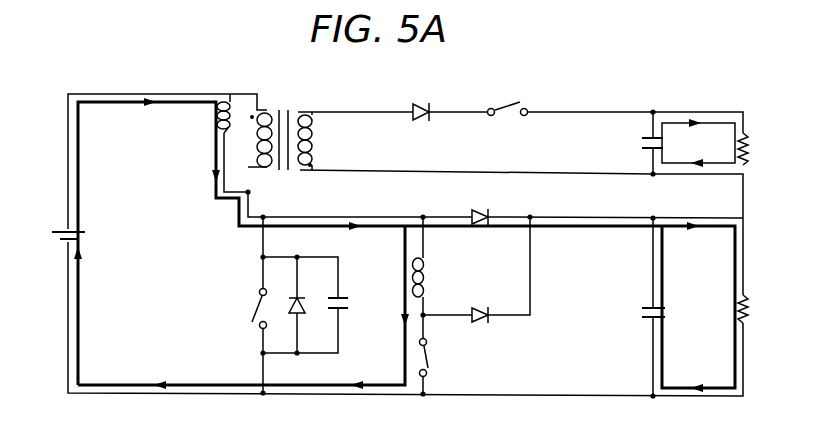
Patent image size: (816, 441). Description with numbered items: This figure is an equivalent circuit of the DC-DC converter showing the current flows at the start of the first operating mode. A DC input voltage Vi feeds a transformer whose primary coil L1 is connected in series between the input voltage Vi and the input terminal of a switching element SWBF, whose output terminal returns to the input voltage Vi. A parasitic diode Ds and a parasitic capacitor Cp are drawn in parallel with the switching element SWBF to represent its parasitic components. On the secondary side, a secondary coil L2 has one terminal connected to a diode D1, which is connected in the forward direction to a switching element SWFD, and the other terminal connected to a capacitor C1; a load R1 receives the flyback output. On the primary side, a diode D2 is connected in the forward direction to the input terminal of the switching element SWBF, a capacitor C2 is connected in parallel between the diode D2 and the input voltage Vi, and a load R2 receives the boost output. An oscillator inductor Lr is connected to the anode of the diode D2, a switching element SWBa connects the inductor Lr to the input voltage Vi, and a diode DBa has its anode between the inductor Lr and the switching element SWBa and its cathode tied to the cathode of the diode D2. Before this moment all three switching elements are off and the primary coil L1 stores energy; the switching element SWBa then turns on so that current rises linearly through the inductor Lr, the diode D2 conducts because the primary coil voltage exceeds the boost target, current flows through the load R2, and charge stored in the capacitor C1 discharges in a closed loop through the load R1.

The input voltage Vi is at (56, 232).
The primary coil L1 is at (252, 132).
The secondary coil L2 is at (315, 141).
The diode D1 is at (419, 128).
The switching element SWFD is at (508, 93).
The capacitor C1 is at (640, 145).
The resistor R1 is at (755, 149).
The diode D2 is at (478, 233).
The inductor Lr is at (434, 277).
The diode DBa is at (488, 331).
The switching element SWBa is at (449, 363).
The switching element SWBF is at (241, 309).
The diode Ds is at (304, 320).
The capacitor Cp is at (351, 304).
The capacitor C2 is at (639, 312).
The resistor R2 is at (757, 311).